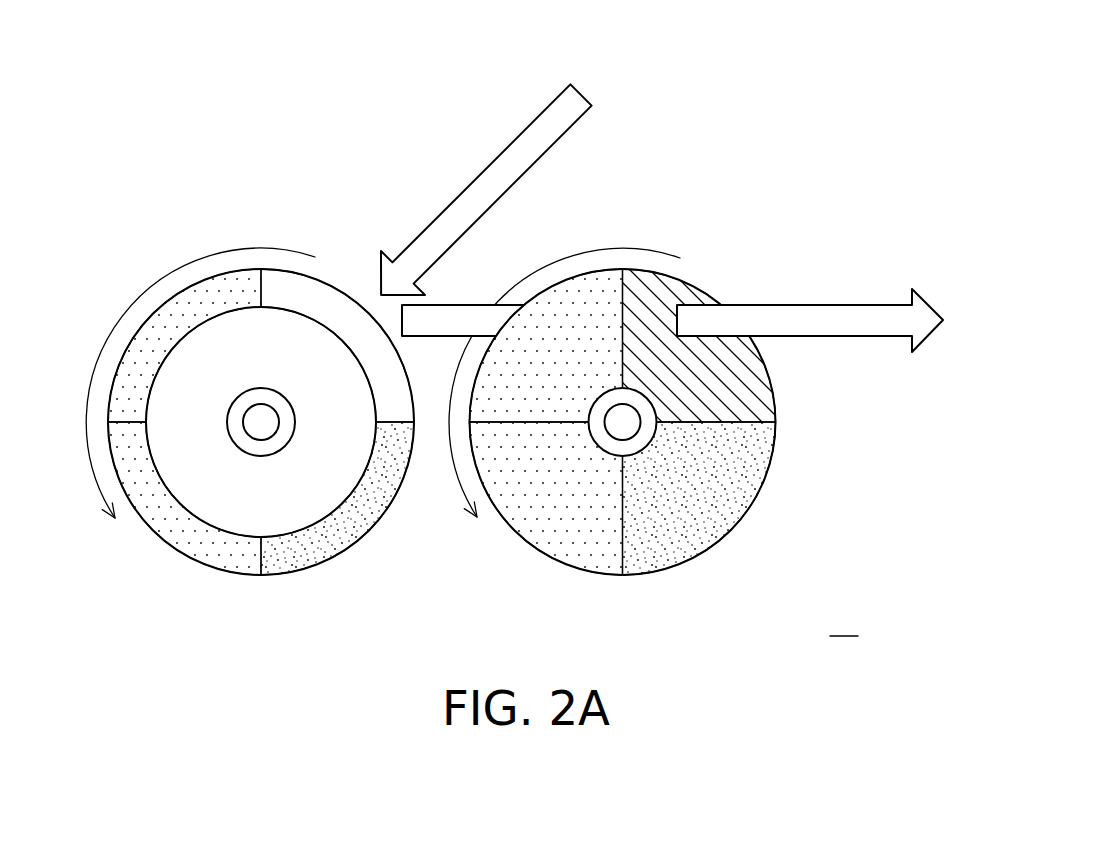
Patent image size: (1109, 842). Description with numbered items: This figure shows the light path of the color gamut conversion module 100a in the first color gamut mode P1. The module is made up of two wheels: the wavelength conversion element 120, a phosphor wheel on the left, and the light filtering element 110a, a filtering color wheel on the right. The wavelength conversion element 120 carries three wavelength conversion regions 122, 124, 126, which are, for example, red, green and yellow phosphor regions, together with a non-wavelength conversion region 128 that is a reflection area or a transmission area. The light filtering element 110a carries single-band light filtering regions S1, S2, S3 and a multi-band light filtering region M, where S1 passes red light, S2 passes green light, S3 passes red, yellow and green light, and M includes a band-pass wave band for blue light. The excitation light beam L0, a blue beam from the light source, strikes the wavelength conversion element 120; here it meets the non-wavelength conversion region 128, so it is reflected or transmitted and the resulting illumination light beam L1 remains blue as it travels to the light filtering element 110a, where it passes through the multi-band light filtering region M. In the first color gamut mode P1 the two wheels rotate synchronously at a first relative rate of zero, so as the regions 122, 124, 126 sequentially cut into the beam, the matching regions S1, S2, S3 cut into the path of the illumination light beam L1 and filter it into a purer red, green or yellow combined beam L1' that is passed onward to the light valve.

The color gamut conversion module 100a is at (526, 420).
The light filtering element 110a is at (705, 393).
The wavelength conversion element 120 is at (248, 423).
The wavelength conversion region 122 is at (330, 535).
The wavelength conversion region 124 is at (167, 520).
The wavelength conversion region 126 is at (168, 322).
The non-wavelength conversion region 128 is at (337, 302).
The single-band light filtering region S1 is at (683, 487).
The single-band light filtering region S2 is at (578, 508).
The single-band light filtering region S3 is at (572, 337).
The multi-band light filtering region M is at (645, 318).
The excitation light beam L0 is at (500, 180).
The illumination light beam L1 is at (501, 291).
The combined beam L1' is at (830, 320).
The first color gamut mode P1 is at (844, 619).